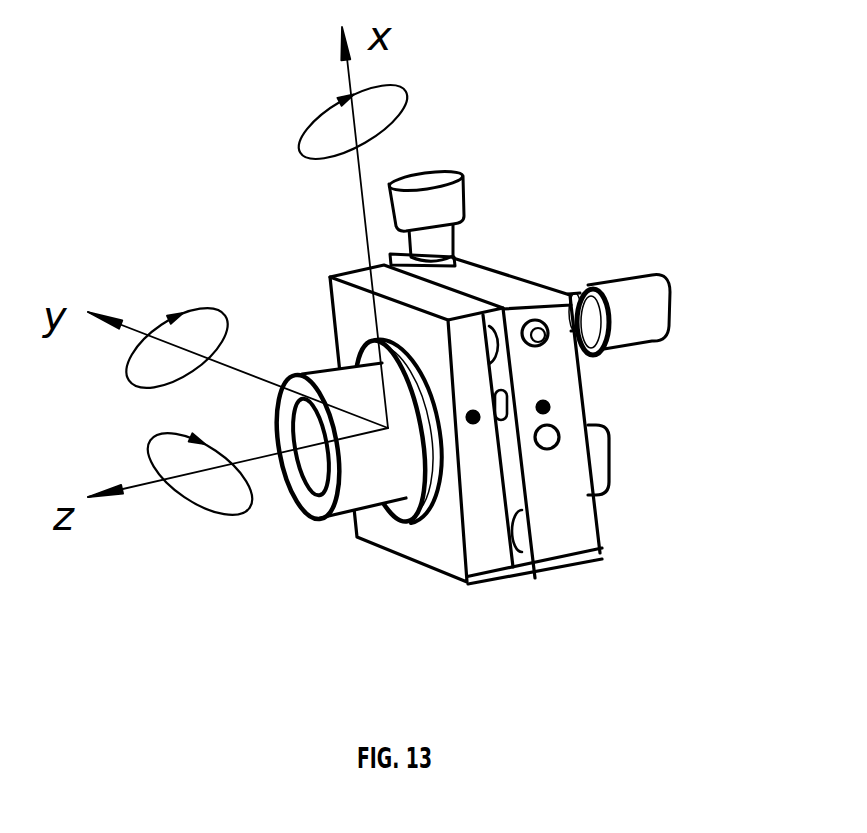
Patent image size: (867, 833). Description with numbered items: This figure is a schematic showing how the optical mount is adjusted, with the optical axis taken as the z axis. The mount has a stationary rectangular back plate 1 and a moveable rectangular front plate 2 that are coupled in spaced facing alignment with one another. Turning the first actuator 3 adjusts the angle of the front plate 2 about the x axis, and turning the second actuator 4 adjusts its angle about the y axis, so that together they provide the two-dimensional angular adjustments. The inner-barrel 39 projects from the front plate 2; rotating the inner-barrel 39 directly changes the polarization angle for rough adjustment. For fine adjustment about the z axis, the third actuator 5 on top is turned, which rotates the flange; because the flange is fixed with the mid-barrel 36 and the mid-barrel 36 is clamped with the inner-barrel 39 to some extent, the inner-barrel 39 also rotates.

The rectangular back plate 1 is at (532, 471).
The rectangular front plate 2 is at (426, 486).
The first actuator 3 is at (655, 478).
The second actuator 4 is at (655, 273).
The third actuator 5 is at (451, 175).
The mid-barrel 36 is at (353, 508).
The inner-barrel 39 is at (317, 387).